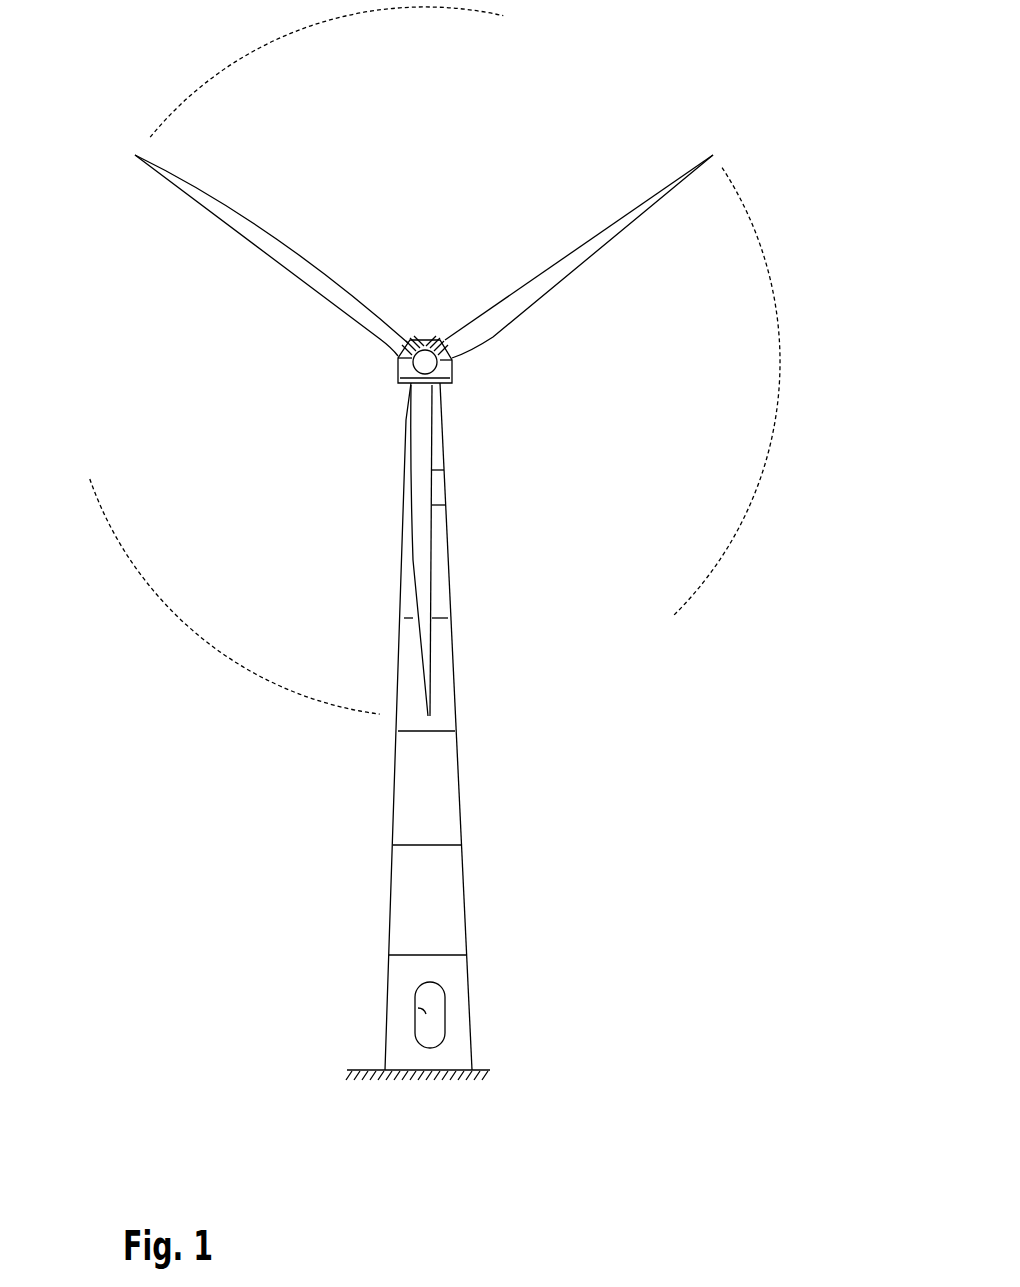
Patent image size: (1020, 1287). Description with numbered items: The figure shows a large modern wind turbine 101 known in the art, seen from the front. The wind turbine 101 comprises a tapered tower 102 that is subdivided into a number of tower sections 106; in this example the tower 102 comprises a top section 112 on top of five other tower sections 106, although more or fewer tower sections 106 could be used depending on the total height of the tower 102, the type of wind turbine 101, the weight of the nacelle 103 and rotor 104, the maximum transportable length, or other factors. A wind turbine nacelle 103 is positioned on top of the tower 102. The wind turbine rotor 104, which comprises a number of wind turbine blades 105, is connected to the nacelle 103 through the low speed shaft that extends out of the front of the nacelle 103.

The wind turbine 101 is at (366, 915).
The tapered tower 102 is at (453, 798).
The wind turbine nacelle 103 is at (452, 383).
The wind turbine rotor 104 is at (398, 358).
The wind turbine blades 105 is at (432, 590).
The tower sections 106 is at (427, 766).
The top section 112 is at (444, 470).